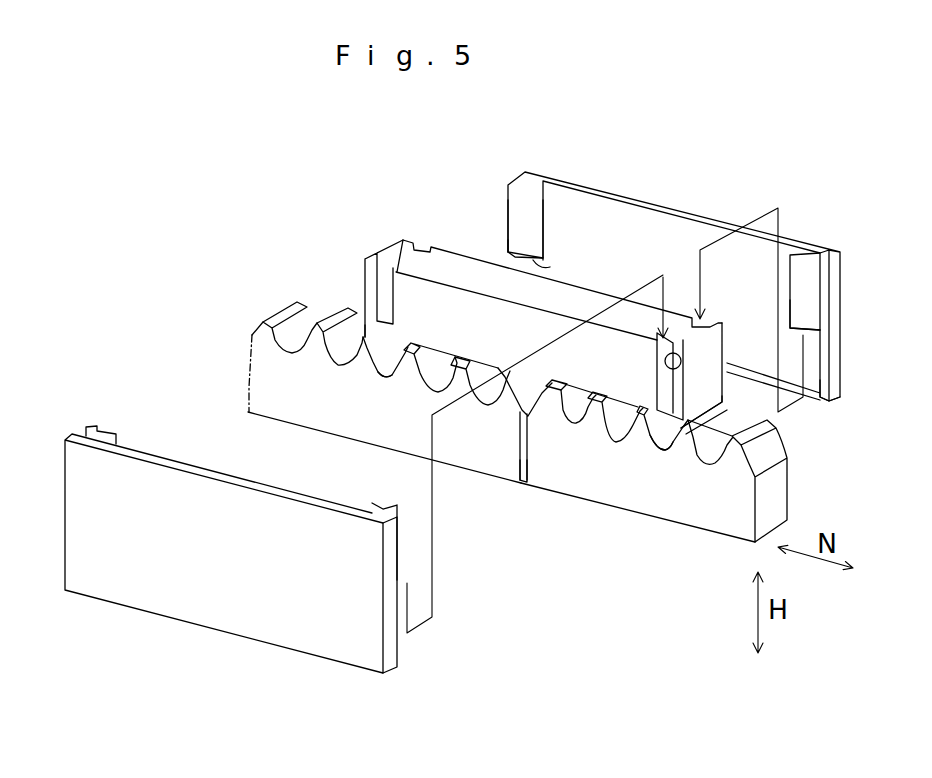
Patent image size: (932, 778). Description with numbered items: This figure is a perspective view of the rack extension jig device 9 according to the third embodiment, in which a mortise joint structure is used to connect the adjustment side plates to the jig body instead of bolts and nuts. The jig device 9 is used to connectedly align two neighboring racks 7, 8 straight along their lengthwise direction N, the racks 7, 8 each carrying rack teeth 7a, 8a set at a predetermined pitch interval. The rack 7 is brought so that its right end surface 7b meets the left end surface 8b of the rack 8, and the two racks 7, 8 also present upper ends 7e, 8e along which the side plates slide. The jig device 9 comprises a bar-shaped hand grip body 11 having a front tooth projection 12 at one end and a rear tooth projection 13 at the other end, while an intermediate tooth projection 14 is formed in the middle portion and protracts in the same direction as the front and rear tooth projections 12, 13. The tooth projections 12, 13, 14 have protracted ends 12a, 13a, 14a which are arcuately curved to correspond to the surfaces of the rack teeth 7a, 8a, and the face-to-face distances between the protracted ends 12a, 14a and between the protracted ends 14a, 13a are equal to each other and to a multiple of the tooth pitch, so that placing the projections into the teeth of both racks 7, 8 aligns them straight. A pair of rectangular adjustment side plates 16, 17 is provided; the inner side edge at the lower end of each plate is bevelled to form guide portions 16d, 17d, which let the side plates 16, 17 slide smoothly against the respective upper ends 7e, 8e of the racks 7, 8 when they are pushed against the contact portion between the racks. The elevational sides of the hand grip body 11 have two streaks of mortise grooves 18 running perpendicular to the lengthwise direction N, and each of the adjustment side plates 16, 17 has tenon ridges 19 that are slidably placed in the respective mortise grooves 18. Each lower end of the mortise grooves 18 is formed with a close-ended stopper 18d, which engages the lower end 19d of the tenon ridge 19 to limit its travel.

The rack 7 is at (400, 397).
The rack teeth 7a is at (322, 328).
The right end surface 7b is at (528, 420).
The upper end 7e is at (412, 360).
The rack 8 is at (640, 493).
The rack teeth 8a is at (568, 420).
The left end surface 8b is at (530, 440).
The upper end 8e is at (692, 425).
The rack extension jig device 9 is at (440, 232).
The hand grip body 11 is at (478, 273).
The front tooth projection 12 is at (373, 362).
The protracted end 12a is at (384, 362).
The rear tooth projection 13 is at (655, 440).
The protracted end 13a is at (660, 452).
The intermediate tooth projection 14 is at (505, 425).
The protracted end 14a is at (514, 440).
The adjustment side plate 16 is at (266, 576).
The guide portion 16d is at (395, 662).
The adjustment side plate 17 is at (842, 318).
The guide portion 17d is at (822, 398).
The mortise grooves 18 is at (420, 247).
The close-ended stopper 18d is at (366, 288).
The tenon ridges 19 is at (534, 205).
The lower end 19d is at (550, 267).